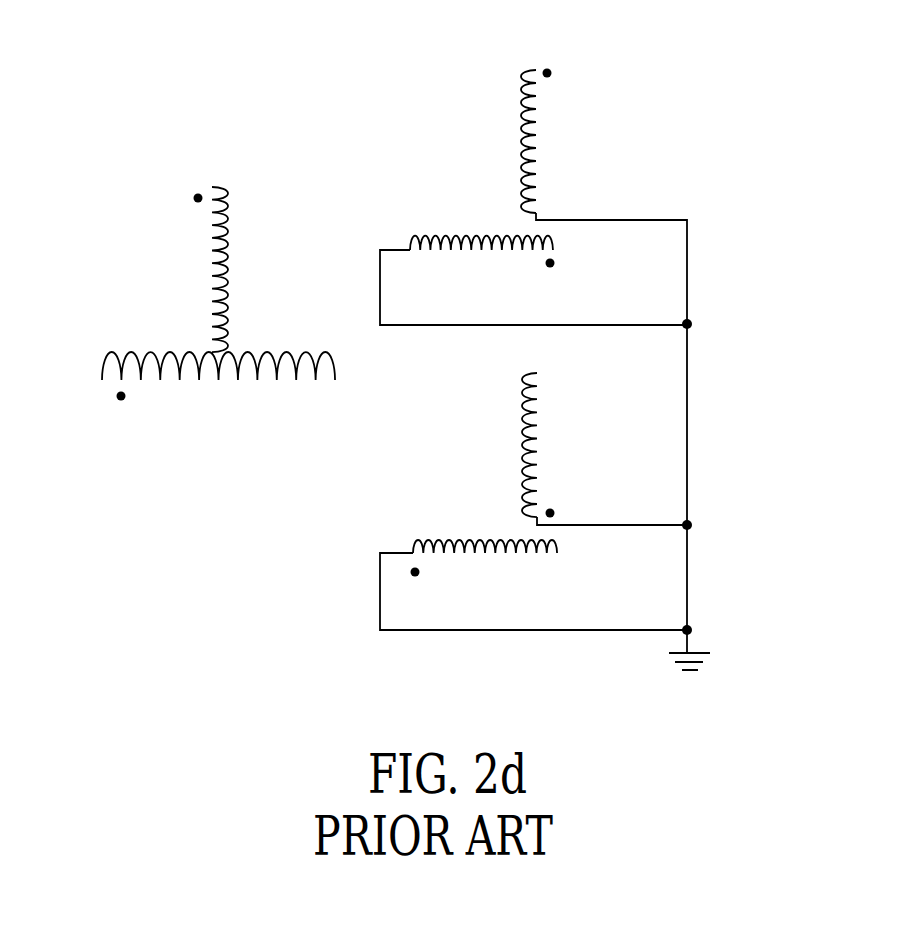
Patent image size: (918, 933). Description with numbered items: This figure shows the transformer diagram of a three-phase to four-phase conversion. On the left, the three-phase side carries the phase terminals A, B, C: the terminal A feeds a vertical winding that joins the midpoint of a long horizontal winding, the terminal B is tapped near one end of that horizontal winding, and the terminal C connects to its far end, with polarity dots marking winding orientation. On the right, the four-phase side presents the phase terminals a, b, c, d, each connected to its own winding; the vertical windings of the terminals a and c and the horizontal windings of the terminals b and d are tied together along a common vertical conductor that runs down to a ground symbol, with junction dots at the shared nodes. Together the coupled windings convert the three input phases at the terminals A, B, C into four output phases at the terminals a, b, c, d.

The phase terminal A is at (212, 187).
The phase terminal B is at (102, 380).
The phase terminal C is at (335, 380).
The phase terminal a is at (536, 70).
The phase terminal b is at (553, 250).
The phase terminal c is at (537, 373).
The phase terminal d is at (557, 553).